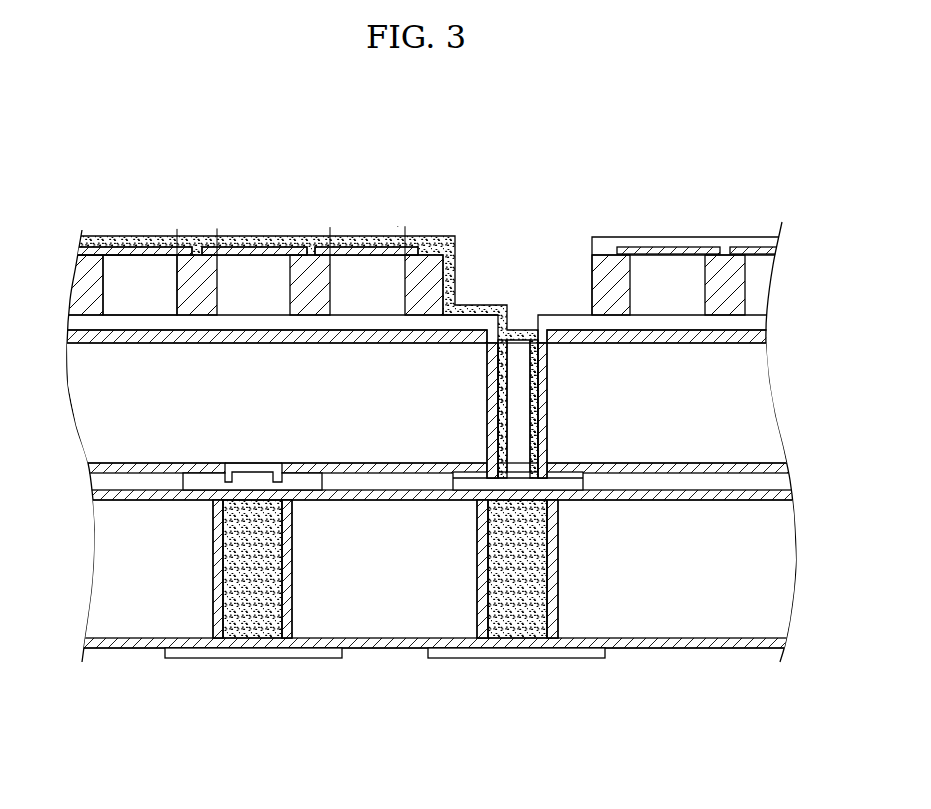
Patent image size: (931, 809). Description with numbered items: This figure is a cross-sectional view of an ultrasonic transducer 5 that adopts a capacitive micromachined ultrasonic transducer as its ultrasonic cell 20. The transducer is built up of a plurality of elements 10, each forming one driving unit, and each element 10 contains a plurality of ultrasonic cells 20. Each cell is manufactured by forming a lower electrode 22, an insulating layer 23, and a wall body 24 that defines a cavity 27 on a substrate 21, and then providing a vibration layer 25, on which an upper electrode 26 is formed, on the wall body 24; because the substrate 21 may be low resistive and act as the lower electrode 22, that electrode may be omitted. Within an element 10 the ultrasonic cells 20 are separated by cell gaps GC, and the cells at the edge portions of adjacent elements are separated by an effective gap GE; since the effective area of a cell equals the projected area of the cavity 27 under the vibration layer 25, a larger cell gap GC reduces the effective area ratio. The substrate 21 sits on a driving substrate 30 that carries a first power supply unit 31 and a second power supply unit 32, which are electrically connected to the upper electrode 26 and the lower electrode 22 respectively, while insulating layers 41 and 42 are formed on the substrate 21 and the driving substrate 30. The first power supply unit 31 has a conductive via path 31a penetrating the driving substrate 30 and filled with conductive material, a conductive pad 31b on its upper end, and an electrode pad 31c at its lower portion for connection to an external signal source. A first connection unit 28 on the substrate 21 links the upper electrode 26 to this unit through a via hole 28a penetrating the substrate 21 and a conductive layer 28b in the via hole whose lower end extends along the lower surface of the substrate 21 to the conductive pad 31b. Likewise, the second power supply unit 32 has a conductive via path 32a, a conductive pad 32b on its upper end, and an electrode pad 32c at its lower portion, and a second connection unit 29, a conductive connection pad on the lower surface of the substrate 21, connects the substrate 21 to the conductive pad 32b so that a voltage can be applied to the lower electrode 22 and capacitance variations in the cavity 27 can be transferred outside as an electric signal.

The ultrasonic transducer 5 is at (653, 210).
The element 10 is at (400, 139).
The ultrasonic cell 20 is at (187, 188).
The substrate 21 is at (78, 400).
The lower electrode 22 is at (70, 337).
The insulating layer 23 is at (72, 323).
The wall body 24 is at (78, 286).
The vibration layer 25 is at (78, 251).
The upper electrode 26 is at (80, 240).
The cavity 27 is at (142, 270).
The first connection unit 28 is at (565, 254).
The via hole 28a is at (505, 345).
The conductive layer 28b is at (547, 360).
The second connection unit 29 is at (256, 465).
The driving substrate 30 is at (790, 567).
The first power supply unit 31 is at (590, 706).
The conductive via path 31a is at (510, 637).
The conductive pad 31b is at (565, 490).
The electrode pad 31c is at (461, 656).
The second power supply unit 32 is at (190, 706).
The conductive via path 32a is at (245, 637).
The conductive pad 32b is at (297, 490).
The electrode pad 32c is at (196, 656).
The insulating layer 41 is at (90, 468).
The insulating layer 42 is at (790, 496).
The cell gap GC is at (197, 225).
The effective gap GE is at (367, 225).